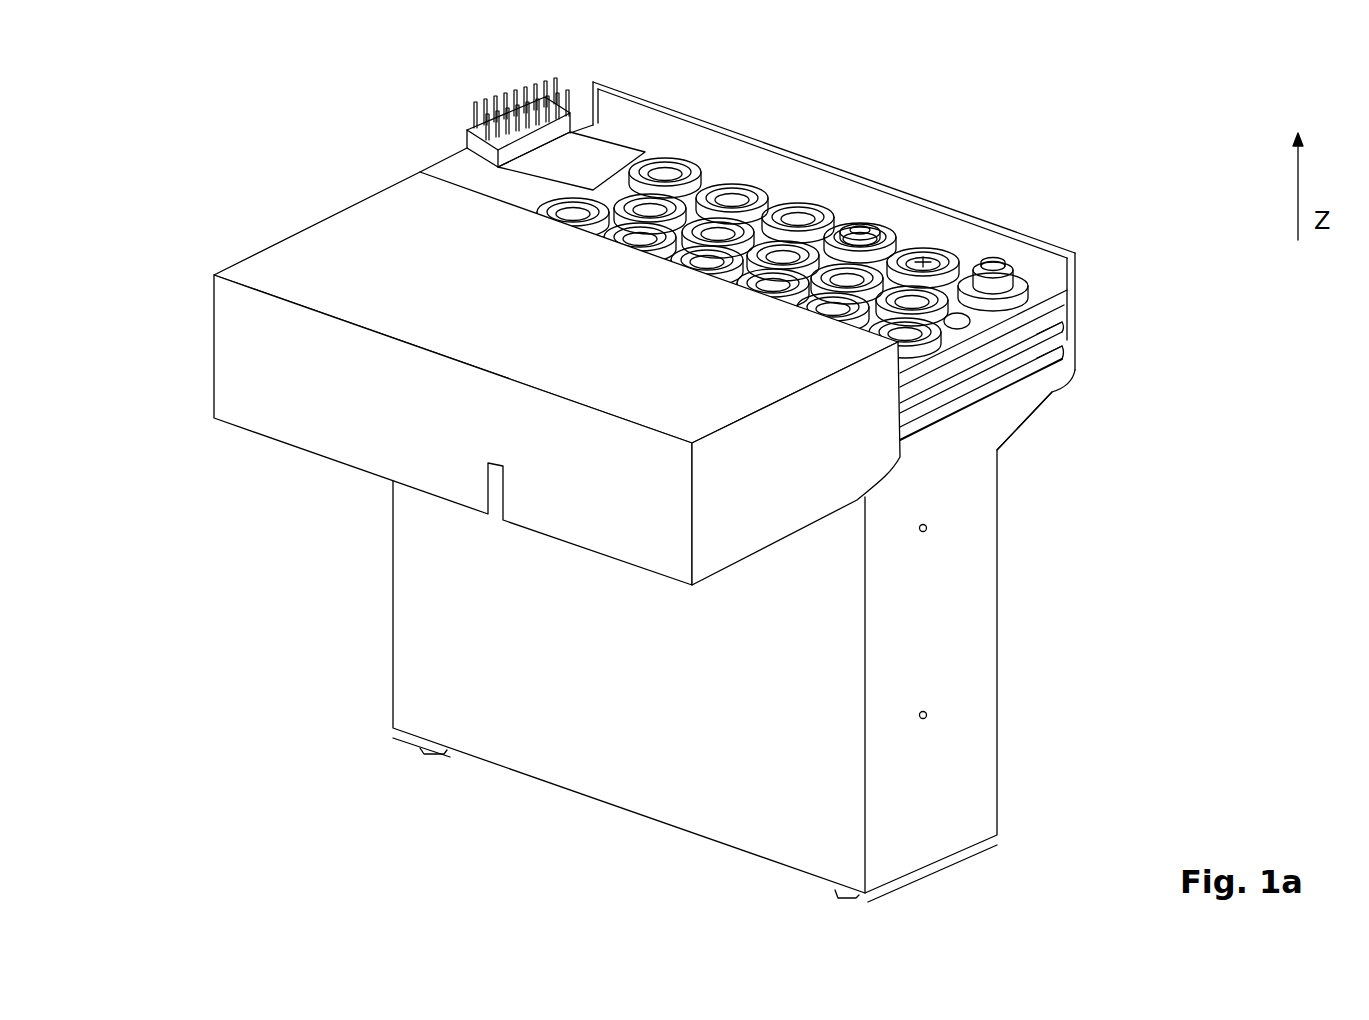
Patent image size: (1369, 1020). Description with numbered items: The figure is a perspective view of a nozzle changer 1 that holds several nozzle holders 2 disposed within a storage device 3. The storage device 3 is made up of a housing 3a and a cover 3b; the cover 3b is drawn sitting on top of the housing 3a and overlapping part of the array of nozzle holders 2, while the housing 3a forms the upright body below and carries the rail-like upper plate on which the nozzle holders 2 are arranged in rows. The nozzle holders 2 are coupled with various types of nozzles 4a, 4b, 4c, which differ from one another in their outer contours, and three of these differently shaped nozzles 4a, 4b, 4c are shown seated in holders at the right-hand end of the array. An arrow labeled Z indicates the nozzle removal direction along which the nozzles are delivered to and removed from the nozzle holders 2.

The nozzle changer 1 is at (704, 485).
The nozzle holder 2 is at (760, 180).
The storage device 3 is at (1034, 490).
The housing 3a is at (502, 192).
The cover 3b is at (497, 267).
The nozzle 4a is at (1020, 268).
The nozzle 4b is at (900, 229).
The nozzle 4c is at (938, 262).